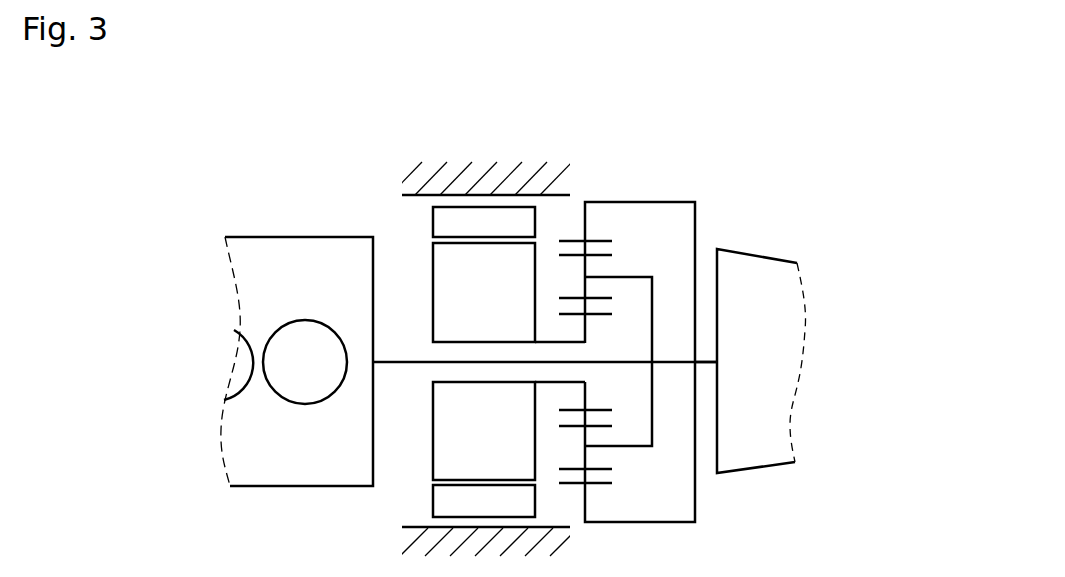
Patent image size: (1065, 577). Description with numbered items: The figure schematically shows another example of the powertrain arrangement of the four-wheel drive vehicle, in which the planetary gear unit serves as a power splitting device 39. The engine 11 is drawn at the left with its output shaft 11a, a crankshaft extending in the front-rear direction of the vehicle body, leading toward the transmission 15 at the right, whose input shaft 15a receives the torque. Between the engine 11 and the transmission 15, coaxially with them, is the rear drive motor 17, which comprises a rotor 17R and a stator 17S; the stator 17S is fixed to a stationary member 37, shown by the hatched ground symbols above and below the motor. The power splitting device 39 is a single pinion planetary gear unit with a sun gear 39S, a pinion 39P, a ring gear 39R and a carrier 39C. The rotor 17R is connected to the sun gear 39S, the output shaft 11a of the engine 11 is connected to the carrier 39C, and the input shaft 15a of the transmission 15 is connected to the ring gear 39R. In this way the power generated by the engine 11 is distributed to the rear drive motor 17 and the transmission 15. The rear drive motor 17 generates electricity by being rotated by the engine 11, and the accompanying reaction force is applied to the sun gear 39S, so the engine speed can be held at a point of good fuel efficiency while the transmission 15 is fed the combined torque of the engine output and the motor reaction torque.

The engine 11 is at (314, 230).
The output shaft 11a is at (398, 365).
The transmission 15 is at (777, 231).
The input shaft 15a is at (710, 365).
The rear drive motor 17 is at (466, 314).
The stator 17S is at (465, 220).
The rotor 17R is at (445, 312).
The stationary member 37 is at (543, 195).
The power splitting device 39 is at (704, 326).
The pinion gear 39P is at (575, 298).
The sun gear 39S is at (600, 315).
The ring gear 39R is at (598, 485).
The carrier 39C is at (652, 307).